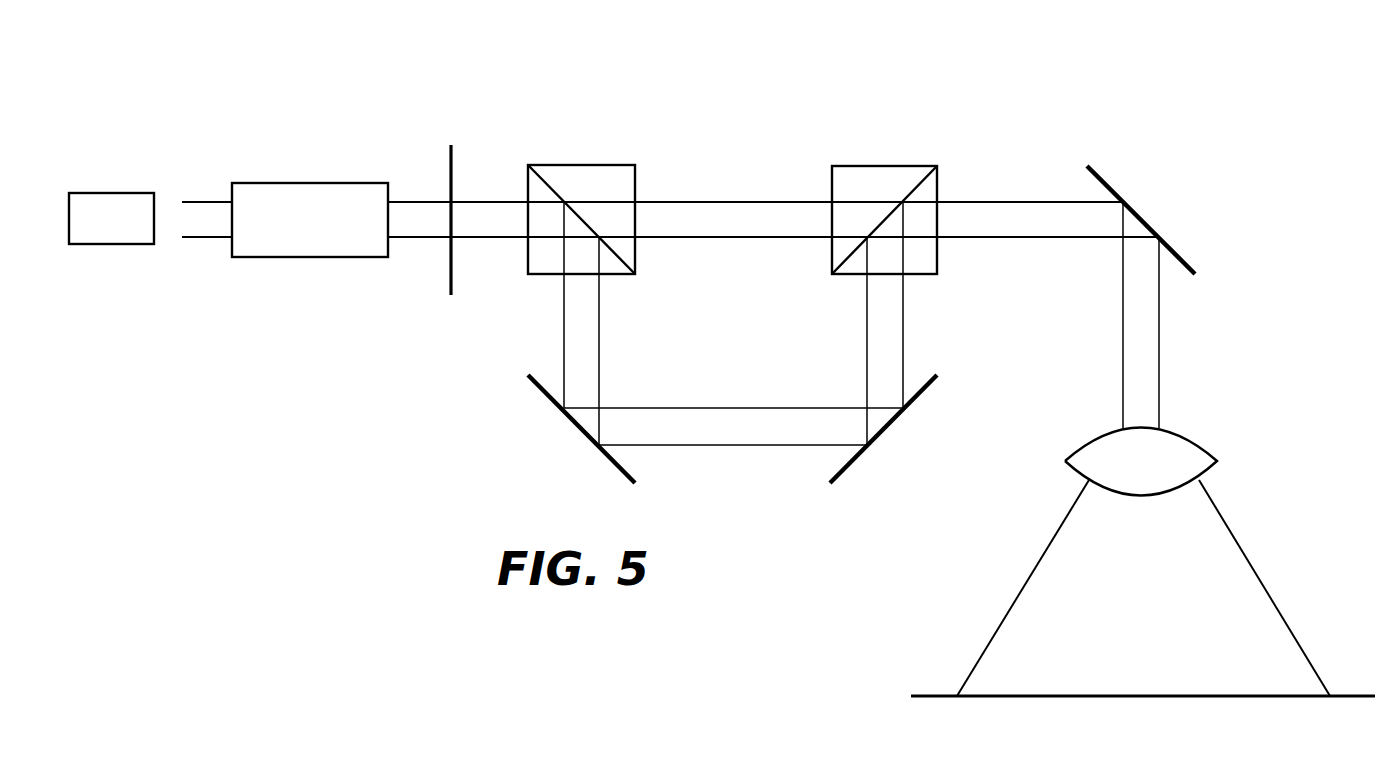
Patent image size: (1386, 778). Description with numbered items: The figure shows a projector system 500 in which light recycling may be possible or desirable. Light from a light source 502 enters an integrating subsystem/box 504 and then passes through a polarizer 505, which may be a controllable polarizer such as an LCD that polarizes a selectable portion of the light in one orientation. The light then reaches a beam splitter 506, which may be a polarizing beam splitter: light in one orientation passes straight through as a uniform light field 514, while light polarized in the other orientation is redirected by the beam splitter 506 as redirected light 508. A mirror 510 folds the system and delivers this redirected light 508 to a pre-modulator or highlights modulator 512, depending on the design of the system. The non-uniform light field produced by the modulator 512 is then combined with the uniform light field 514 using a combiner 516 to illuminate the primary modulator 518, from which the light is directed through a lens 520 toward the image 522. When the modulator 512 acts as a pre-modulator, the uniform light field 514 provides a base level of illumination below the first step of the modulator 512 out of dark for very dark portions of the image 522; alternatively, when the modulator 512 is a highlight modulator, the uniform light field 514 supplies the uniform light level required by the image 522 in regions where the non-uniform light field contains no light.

The projector system 500 is at (990, 70).
The light source 502 is at (97, 193).
The integrating subsystem/box 504 is at (307, 183).
The polarizer 505 is at (453, 160).
The beam splitter 506 is at (578, 165).
The redirected light 508 is at (562, 311).
The mirror 510 is at (534, 389).
The highlights modulator 512 is at (931, 389).
The uniform light field 514 is at (700, 202).
The combiner 516 is at (873, 166).
The primary modulator 518 is at (1101, 177).
The lens 520 is at (1072, 468).
The image 522 is at (942, 694).